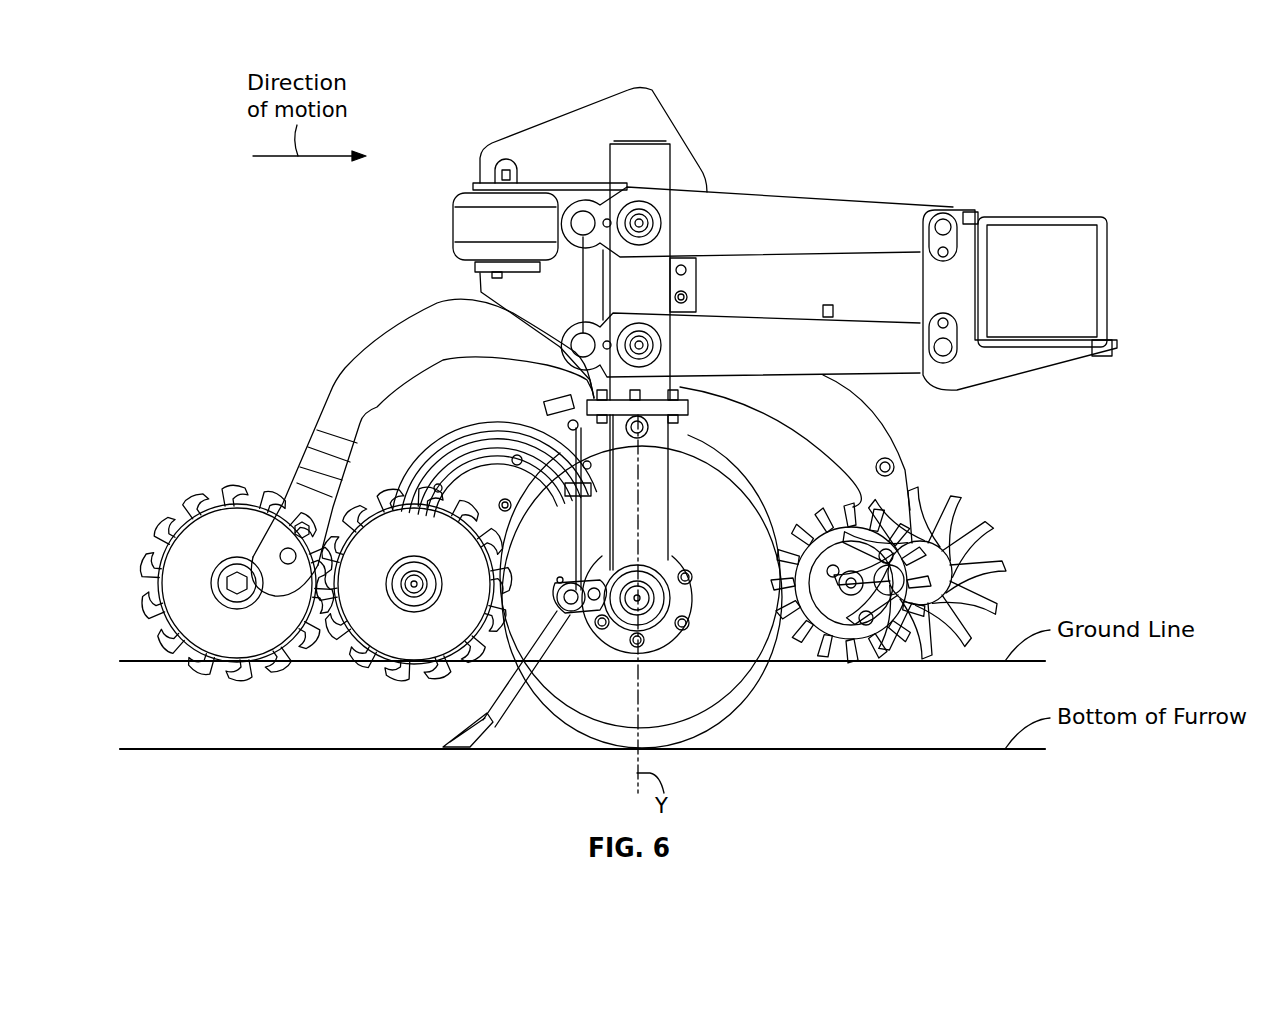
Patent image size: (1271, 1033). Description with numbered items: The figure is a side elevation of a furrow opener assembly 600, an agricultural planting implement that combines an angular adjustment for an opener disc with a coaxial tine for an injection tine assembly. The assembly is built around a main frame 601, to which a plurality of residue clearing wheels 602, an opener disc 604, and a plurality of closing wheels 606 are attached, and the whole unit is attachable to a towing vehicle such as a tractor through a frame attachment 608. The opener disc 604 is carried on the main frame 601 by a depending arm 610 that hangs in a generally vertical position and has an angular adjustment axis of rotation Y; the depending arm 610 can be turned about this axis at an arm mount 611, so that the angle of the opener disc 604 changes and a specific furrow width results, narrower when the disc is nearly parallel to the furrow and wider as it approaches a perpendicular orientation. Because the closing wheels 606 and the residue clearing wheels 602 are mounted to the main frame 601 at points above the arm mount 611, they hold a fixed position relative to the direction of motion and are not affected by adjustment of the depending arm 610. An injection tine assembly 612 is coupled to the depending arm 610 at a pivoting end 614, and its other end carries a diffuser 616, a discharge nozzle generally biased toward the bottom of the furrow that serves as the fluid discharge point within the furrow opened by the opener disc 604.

The furrow opener assembly 600 is at (942, 137).
The main frame 601 is at (660, 290).
The residue clearing wheels 602 is at (960, 512).
The opener disc 604 is at (730, 520).
The closing wheels 606 is at (390, 620).
The frame attachment 608 is at (1056, 237).
The depending arm 610 is at (657, 465).
The arm mount 611 is at (540, 380).
The injection tine assembly 612 is at (553, 580).
The pivoting end 614 is at (553, 580).
The diffuser 616 is at (469, 742).